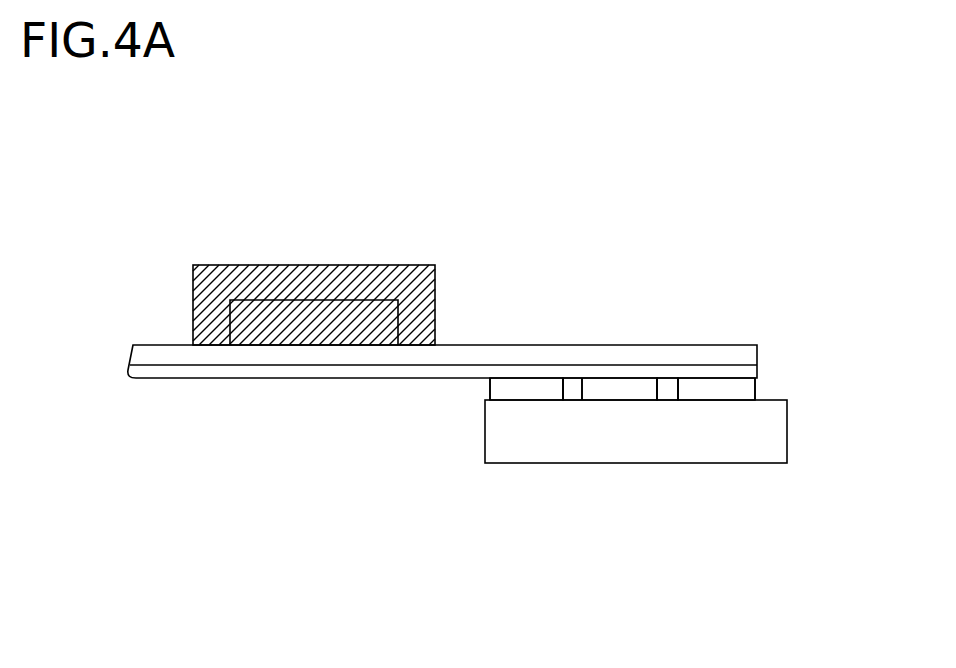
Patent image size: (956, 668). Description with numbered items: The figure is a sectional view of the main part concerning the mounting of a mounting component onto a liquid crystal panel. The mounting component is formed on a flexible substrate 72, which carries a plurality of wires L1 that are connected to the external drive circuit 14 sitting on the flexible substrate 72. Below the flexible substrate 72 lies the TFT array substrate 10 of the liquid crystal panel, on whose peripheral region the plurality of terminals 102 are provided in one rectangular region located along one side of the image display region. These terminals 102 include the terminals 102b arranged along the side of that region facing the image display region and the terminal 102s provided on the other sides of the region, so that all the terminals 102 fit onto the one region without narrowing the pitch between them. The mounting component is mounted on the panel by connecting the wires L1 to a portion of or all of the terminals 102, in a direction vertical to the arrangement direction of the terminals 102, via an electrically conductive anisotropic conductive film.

The flexible substrate 72 is at (152, 343).
The external drive circuit 14 is at (289, 305).
The wires L1 is at (288, 368).
The TFT array substrate 10 is at (770, 425).
The terminals 102 is at (622, 513).
The terminals 102b is at (537, 392).
The terminal 102s is at (713, 390).